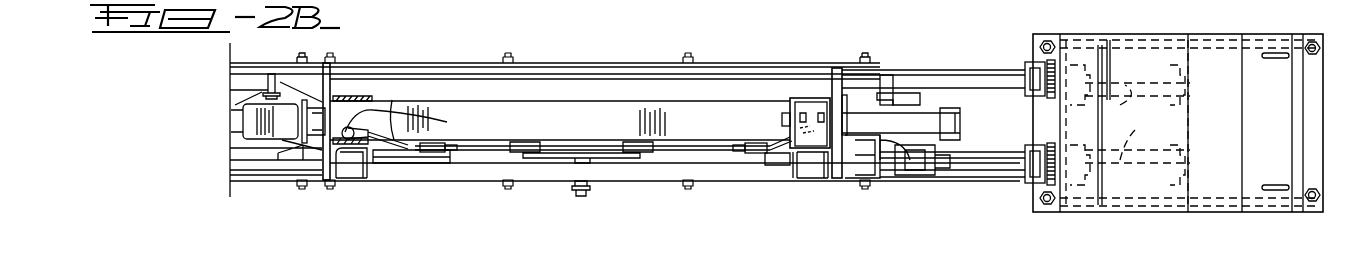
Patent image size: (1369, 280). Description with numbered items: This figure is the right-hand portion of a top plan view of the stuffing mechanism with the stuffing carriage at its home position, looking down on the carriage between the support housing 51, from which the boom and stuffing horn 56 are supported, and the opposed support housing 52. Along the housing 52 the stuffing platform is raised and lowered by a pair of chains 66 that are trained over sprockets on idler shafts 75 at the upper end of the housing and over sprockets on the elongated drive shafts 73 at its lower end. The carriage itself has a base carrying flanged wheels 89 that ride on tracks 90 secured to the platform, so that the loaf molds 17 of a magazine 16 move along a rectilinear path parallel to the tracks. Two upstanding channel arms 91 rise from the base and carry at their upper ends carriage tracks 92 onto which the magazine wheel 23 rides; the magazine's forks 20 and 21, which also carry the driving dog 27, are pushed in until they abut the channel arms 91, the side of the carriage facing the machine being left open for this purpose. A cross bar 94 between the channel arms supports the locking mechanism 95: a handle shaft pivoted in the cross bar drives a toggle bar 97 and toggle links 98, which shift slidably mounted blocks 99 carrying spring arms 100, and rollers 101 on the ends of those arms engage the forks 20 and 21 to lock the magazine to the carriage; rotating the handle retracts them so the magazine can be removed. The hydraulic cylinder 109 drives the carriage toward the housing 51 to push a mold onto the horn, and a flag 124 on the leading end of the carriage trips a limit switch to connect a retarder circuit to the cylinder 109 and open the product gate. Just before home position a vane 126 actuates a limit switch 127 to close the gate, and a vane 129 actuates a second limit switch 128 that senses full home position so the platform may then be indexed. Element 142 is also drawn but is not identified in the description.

The magazine of loaf molds 16 is at (801, 91).
The loaf molds 17 is at (637, 100).
The fork 20 is at (362, 96).
The fork 21 is at (835, 98).
The wheel 23 is at (888, 75).
The driving dog 27 is at (786, 113).
The support housing 51 is at (501, 1).
The support housing 52 is at (1138, 225).
The stuffing horn 56 is at (278, 128).
The chains 66 is at (1043, 122).
The drive shafts 73 is at (985, 152).
The idler shafts 75 is at (1130, 112).
The wheels 89 is at (306, 63).
The tracks 90 is at (728, 76).
The channel arms 91 is at (350, 178).
The carriage tracks 92 is at (845, 100).
The cross bar 94 is at (638, 172).
The locking mechanism 95 is at (572, 196).
The toggle bar 97 is at (538, 155).
The toggle links 98 is at (470, 152).
The blocks 99 is at (415, 152).
The spring arms 100 is at (380, 152).
The rollers 101 is at (409, 127).
The hydraulic cylinder 109 is at (920, 135).
The flag 124 is at (252, 96).
The vane 126 is at (878, 165).
The limit switch 127 is at (925, 160).
The second limit switch 128 is at (950, 78).
The vane 129 is at (905, 93).
The guide 142 is at (649, 7).